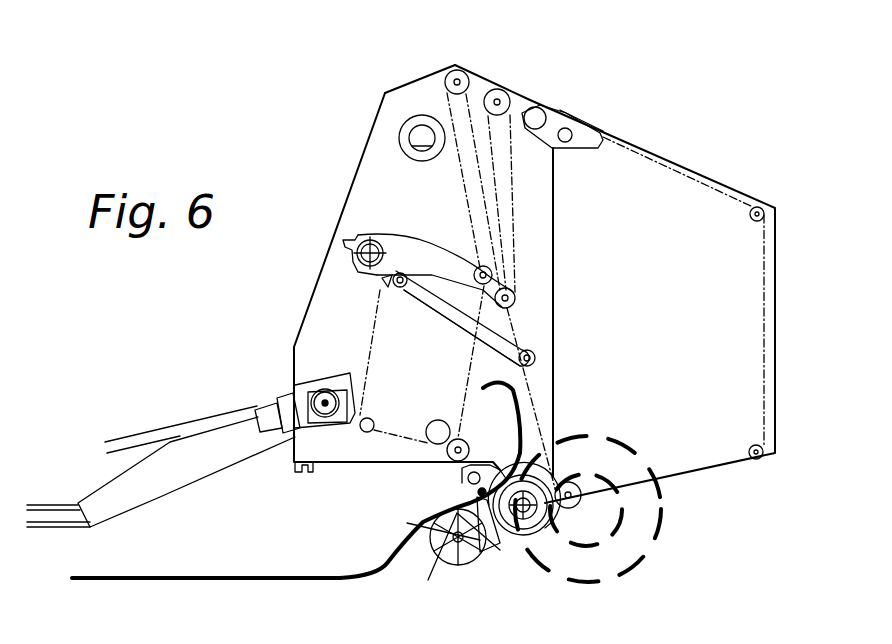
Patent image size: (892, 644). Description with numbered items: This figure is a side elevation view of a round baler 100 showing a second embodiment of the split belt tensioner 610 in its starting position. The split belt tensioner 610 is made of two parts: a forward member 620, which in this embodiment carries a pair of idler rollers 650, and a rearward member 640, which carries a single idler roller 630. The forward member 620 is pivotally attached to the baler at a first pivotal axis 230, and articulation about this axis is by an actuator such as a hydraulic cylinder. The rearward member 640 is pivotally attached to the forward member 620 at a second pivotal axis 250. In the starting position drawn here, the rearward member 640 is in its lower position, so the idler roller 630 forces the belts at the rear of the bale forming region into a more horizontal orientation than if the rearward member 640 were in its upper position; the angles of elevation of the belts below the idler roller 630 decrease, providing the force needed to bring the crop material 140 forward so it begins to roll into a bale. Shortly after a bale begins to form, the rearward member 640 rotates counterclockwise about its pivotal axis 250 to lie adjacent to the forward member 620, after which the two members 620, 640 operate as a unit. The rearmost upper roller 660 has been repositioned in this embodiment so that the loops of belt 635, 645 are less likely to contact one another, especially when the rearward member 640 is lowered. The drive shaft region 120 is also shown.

The baler 100 is at (717, 528).
The drive shaft 120 is at (443, 163).
The crop material 140 is at (243, 577).
The first pivotal axis 230 is at (358, 243).
The second pivotal axis 250 is at (376, 288).
The split belt tensioner 610 is at (472, 334).
The forward member 620 is at (432, 266).
The idler roller 630 is at (536, 358).
The loop of belt 635 is at (497, 164).
The rearward member 640 is at (445, 303).
The loop of belt 645 is at (507, 185).
The pair of idler rollers 650 is at (512, 296).
The rearmost upper roller 660 is at (500, 103).